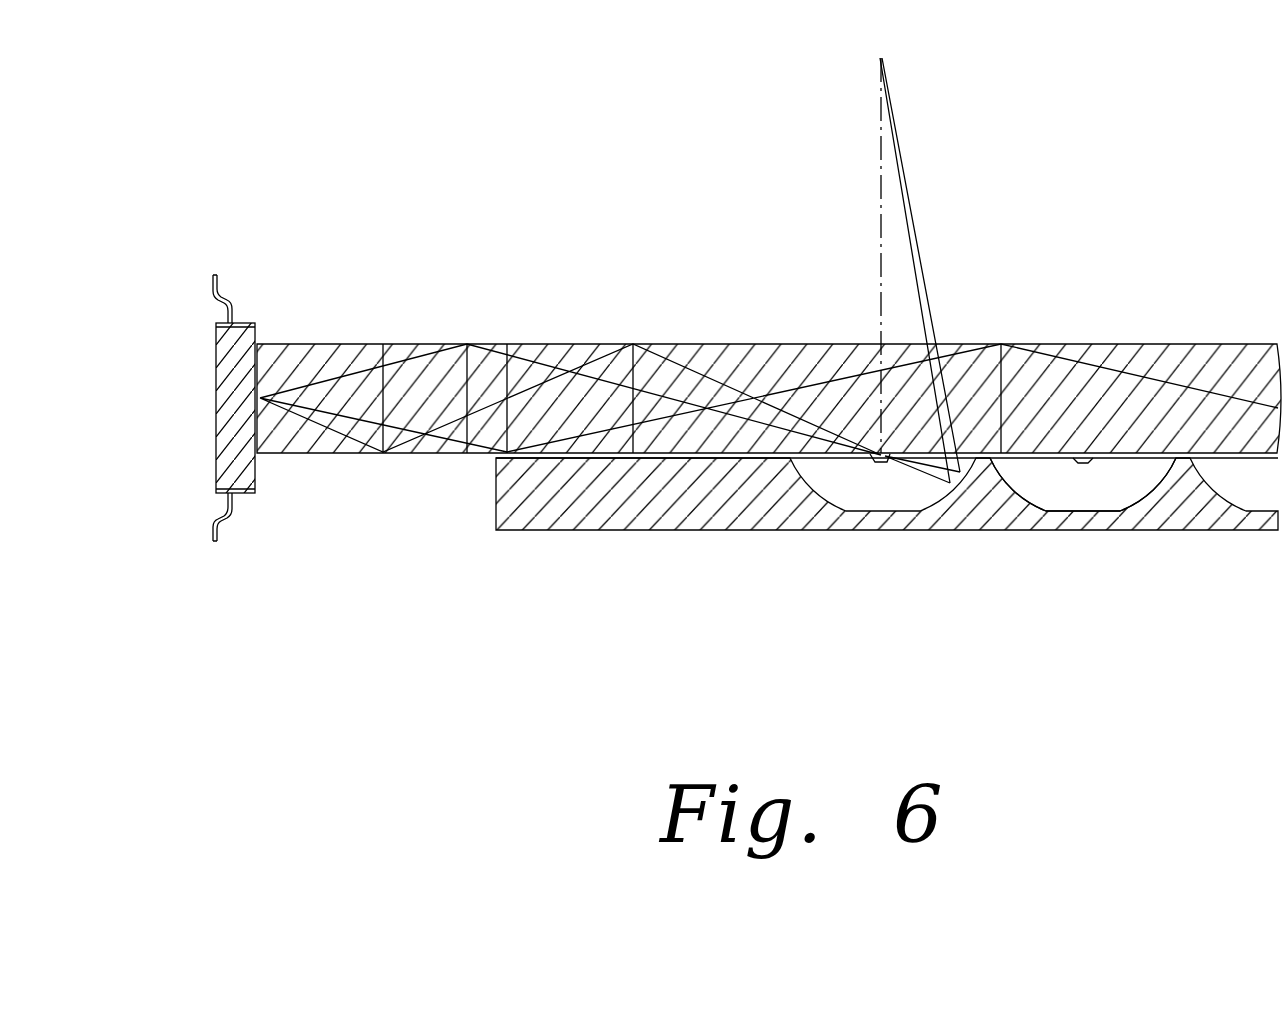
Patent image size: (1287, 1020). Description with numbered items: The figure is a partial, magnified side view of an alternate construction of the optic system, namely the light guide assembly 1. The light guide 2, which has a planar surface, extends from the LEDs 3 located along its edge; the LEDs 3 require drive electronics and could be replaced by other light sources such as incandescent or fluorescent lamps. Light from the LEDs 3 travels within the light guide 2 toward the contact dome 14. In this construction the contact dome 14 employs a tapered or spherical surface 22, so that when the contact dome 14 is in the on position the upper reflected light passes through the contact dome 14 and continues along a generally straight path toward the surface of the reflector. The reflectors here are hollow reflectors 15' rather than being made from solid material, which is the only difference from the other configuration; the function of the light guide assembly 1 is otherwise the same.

The light guide assembly 1 is at (390, 512).
The light guide 2 is at (366, 343).
The LEDs 3 is at (238, 385).
The contact dome 14 is at (884, 462).
The tapered or spherical surface 22 is at (877, 458).
The hollow reflectors 15' is at (1130, 568).